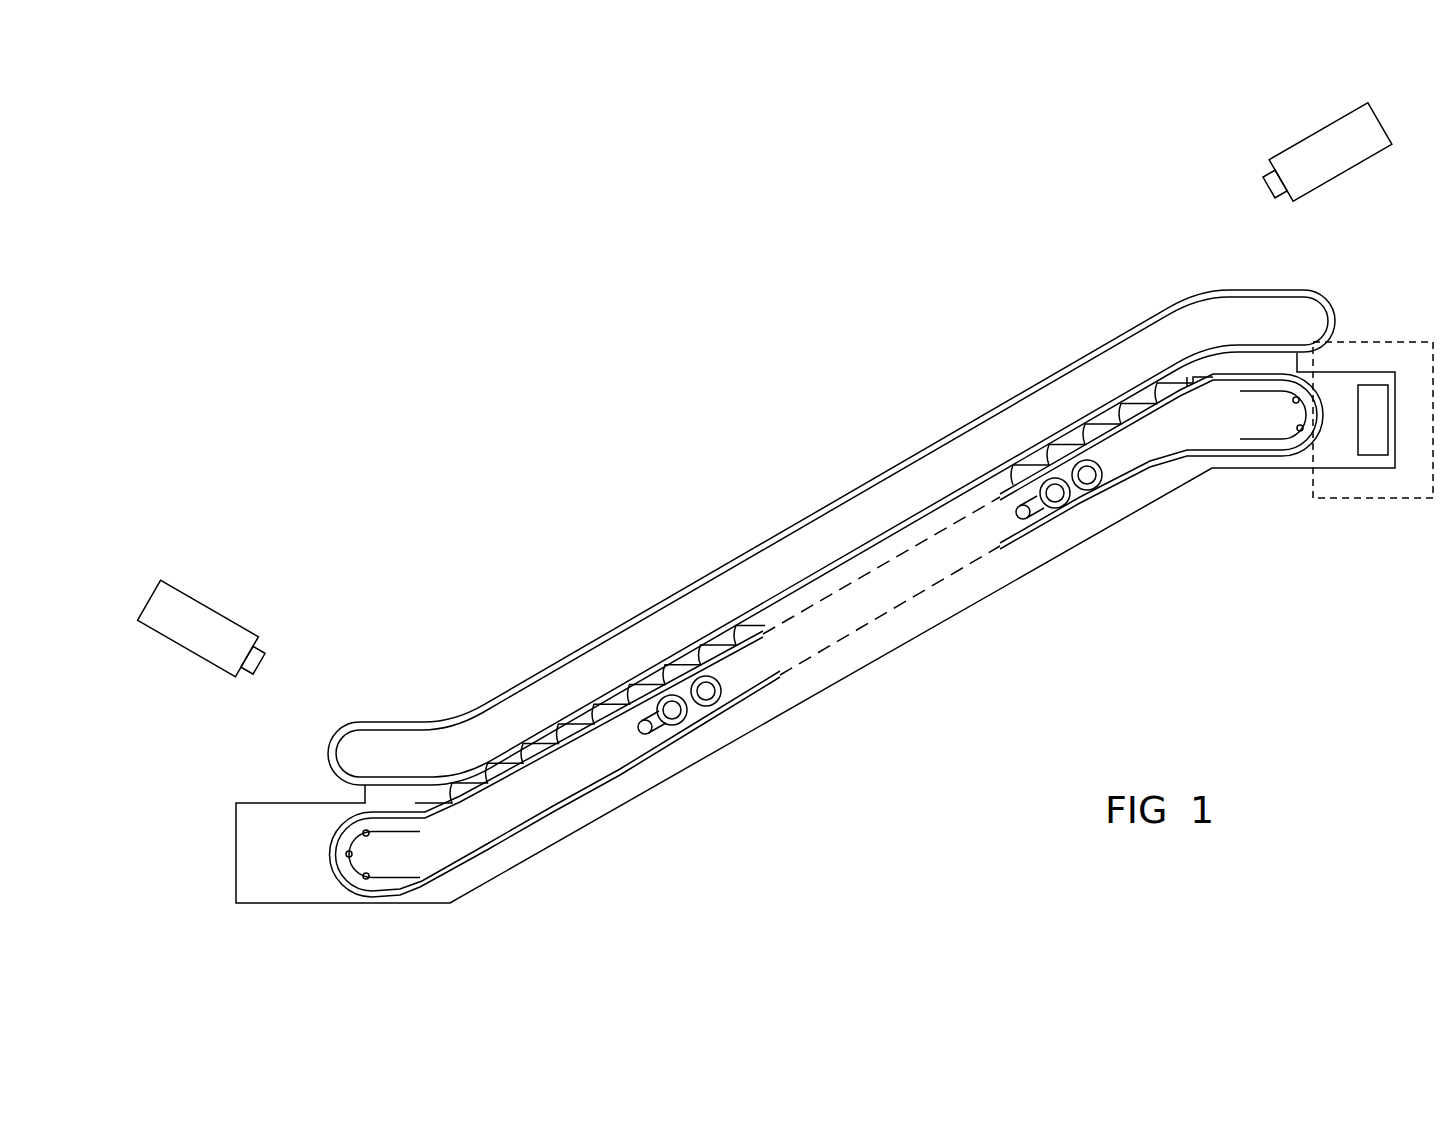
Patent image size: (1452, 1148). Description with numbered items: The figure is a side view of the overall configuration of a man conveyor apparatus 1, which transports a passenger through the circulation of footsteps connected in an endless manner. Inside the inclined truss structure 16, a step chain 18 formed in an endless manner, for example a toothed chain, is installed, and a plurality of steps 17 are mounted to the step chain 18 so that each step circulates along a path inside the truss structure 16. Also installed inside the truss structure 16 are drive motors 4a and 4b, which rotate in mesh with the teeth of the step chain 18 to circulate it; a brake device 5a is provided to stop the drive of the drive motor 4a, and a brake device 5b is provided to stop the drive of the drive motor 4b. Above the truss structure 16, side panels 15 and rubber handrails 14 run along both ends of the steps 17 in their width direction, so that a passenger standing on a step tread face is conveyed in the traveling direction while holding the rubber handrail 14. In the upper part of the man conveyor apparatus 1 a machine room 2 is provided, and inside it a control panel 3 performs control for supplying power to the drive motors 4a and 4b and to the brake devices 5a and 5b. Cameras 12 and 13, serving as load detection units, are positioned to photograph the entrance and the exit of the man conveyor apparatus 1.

The man conveyor apparatus 1 is at (815, 583).
The machine room 2 is at (1410, 340).
The control panel 3 is at (1378, 450).
The drive motor 4a is at (1072, 492).
The drive motor 4b is at (673, 727).
The brake device 5a is at (1103, 478).
The brake device 5b is at (730, 678).
The camera 12 is at (218, 612).
The camera 13 is at (1315, 133).
The rubber handrail 14 is at (654, 606).
The side panel 15 is at (755, 580).
The truss structure 16 is at (907, 648).
The step 17 is at (550, 732).
The step chain 18 is at (553, 808).